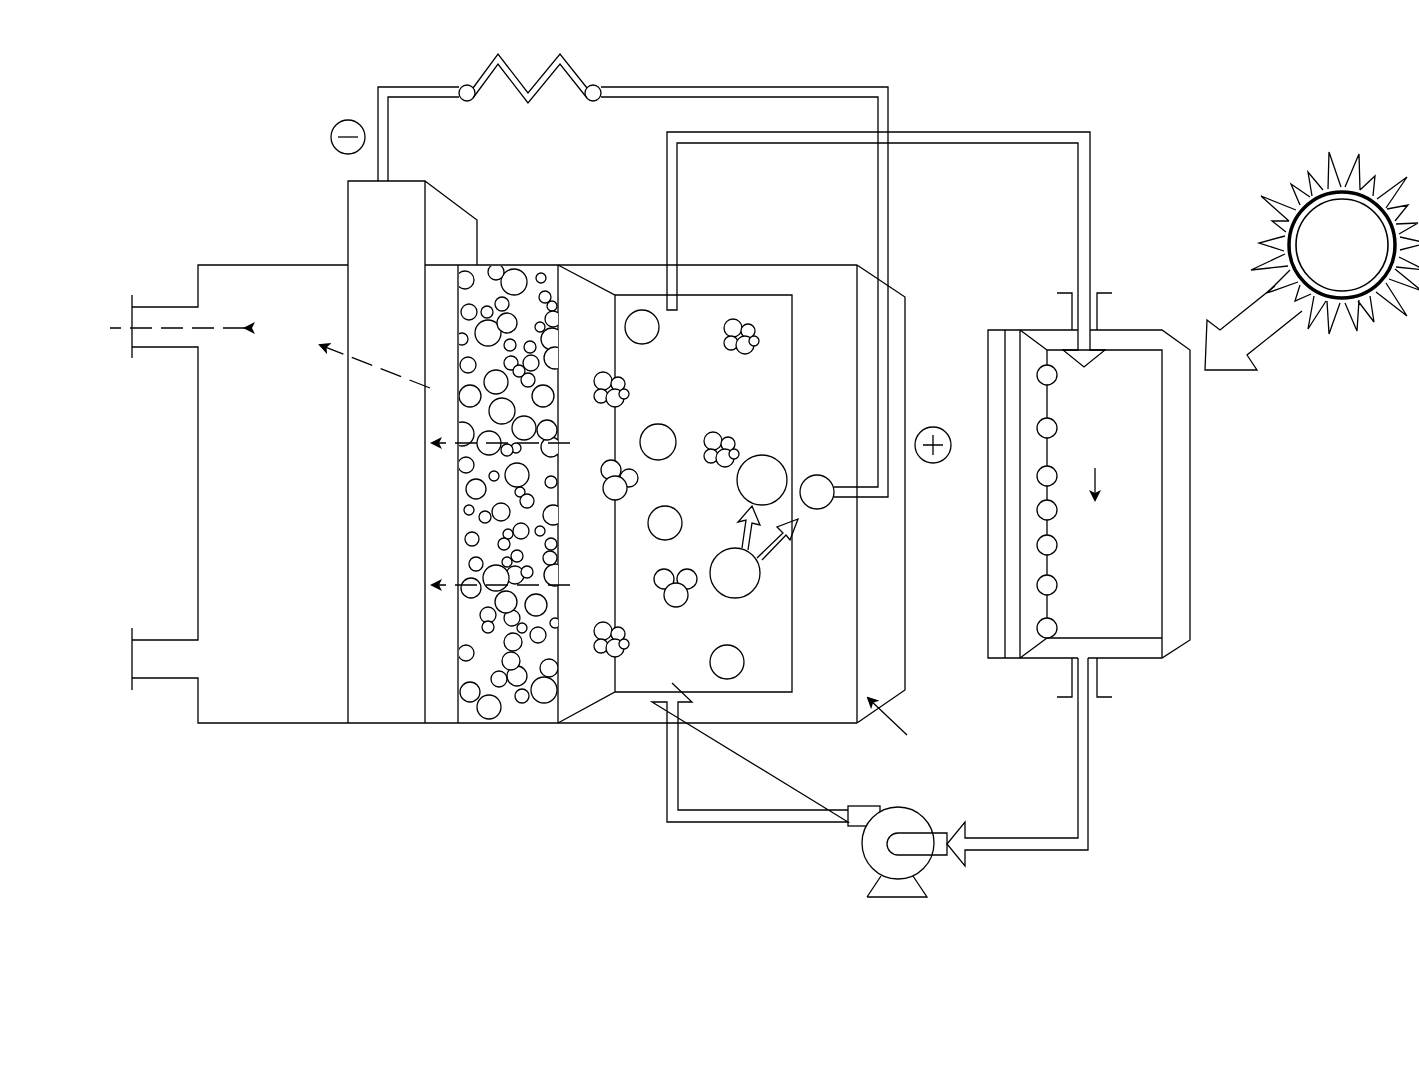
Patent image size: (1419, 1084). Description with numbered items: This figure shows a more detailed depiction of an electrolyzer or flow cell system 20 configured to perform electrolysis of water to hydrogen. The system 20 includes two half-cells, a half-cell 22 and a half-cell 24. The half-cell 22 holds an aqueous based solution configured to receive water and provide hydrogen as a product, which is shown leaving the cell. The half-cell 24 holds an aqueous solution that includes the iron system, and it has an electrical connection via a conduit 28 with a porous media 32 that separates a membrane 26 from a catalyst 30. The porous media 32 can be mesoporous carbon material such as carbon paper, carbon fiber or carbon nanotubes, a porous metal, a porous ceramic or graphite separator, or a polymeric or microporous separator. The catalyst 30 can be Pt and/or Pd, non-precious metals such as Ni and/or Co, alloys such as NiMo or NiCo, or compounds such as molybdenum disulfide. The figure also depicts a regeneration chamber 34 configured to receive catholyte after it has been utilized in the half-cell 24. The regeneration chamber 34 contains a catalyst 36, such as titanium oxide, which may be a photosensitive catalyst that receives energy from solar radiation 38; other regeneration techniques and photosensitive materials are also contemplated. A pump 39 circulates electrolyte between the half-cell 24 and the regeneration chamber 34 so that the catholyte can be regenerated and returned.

The system 20 is at (1162, 82).
The half-cell 22 is at (292, 263).
The half-cell 24 is at (718, 293).
The membrane 26 is at (525, 723).
The conduit 28 is at (683, 85).
The catalyst 30 is at (437, 725).
The porous media 32 is at (373, 712).
The regeneration chamber 34 is at (1132, 662).
The catalyst 36 is at (1040, 363).
The solar radiation 38 is at (1312, 261).
The pump 39 is at (900, 898).